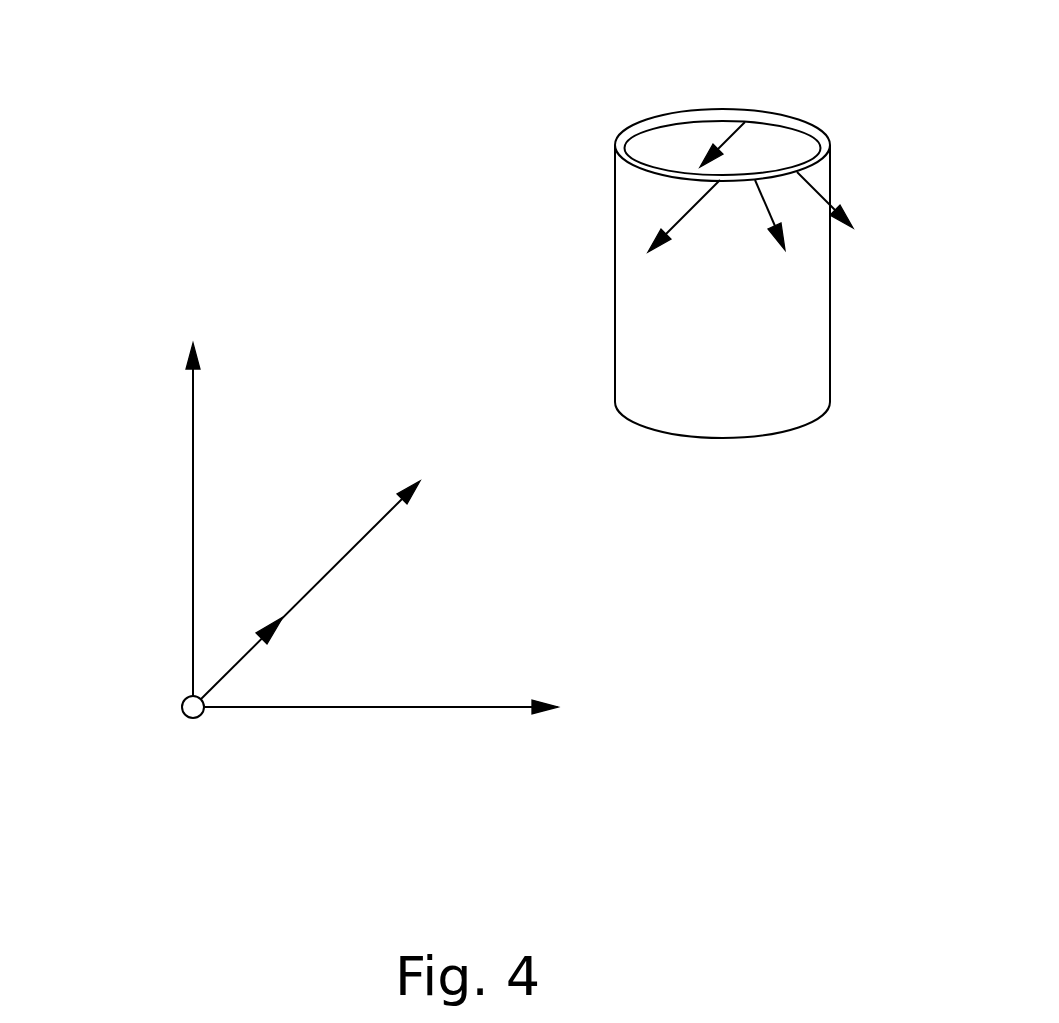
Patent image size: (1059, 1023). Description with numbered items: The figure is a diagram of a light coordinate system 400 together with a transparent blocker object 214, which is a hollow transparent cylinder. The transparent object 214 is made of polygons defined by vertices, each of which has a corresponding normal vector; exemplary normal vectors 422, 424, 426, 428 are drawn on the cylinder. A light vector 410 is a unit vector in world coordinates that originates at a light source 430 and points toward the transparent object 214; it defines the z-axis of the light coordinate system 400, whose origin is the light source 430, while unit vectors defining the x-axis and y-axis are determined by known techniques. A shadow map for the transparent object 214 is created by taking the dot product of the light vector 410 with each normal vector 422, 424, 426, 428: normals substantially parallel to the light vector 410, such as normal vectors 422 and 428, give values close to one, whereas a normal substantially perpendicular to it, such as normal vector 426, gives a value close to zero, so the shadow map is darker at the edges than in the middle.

The transparent blocker object 214 is at (831, 340).
The light coordinate system 400 is at (176, 849).
The light vector 410 is at (240, 658).
The normal vector 422 is at (680, 218).
The normal vector 424 is at (762, 207).
The normal vector 426 is at (830, 188).
The normal vector 428 is at (728, 137).
The light source 430 is at (182, 707).